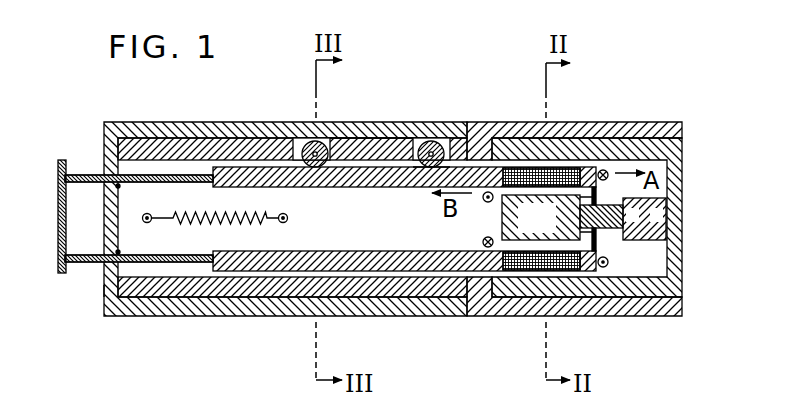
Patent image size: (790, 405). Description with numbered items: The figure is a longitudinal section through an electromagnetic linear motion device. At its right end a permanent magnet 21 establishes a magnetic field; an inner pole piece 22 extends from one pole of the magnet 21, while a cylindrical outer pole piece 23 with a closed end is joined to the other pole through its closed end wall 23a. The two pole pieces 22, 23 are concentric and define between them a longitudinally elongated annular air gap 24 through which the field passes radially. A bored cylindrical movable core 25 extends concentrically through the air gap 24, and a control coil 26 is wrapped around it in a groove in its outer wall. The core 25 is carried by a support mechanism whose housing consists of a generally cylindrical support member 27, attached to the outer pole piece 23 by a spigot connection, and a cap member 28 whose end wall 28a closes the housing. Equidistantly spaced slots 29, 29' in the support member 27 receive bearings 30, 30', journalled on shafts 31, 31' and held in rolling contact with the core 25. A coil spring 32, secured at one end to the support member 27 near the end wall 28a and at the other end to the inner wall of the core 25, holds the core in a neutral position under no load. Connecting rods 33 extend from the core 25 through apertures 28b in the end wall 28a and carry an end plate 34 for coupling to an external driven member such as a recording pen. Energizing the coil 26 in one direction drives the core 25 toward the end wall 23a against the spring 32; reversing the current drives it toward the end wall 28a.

The permanent magnet 21 is at (648, 241).
The inner pole piece 22 is at (548, 233).
The outer pole piece 23 is at (626, 298).
The closed end wall 23a is at (683, 168).
The annular air gap 24 is at (557, 273).
The movable core 25 is at (360, 258).
The control coil 26 is at (527, 264).
The support member 27 is at (257, 290).
The cap member 28 is at (165, 316).
The end wall 28a is at (104, 285).
The apertures 28b is at (118, 250).
The slot 29 is at (301, 130).
The slot 29' is at (423, 130).
The bearing 30 is at (325, 127).
The bearing 30' is at (448, 127).
The shaft 31 is at (371, 109).
The shaft 31' is at (420, 193).
The coil spring 32 is at (200, 222).
The connecting rods 33 is at (85, 175).
The end plate 34 is at (58, 180).